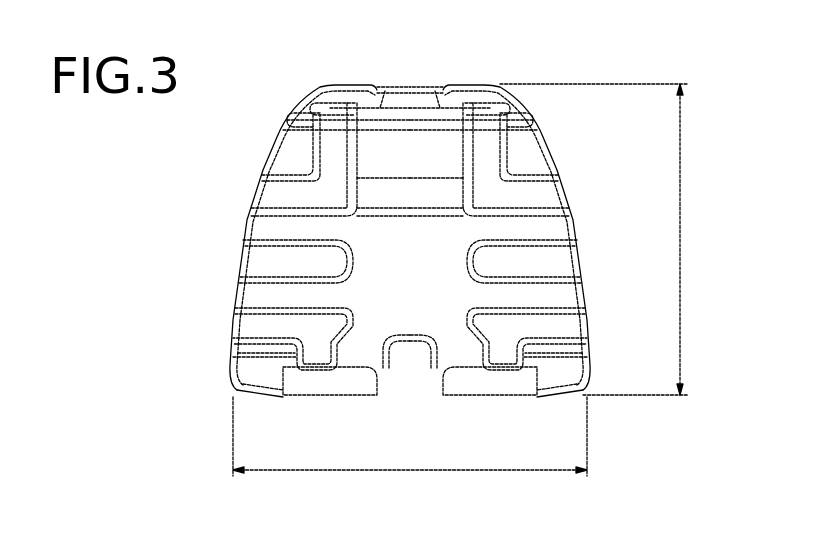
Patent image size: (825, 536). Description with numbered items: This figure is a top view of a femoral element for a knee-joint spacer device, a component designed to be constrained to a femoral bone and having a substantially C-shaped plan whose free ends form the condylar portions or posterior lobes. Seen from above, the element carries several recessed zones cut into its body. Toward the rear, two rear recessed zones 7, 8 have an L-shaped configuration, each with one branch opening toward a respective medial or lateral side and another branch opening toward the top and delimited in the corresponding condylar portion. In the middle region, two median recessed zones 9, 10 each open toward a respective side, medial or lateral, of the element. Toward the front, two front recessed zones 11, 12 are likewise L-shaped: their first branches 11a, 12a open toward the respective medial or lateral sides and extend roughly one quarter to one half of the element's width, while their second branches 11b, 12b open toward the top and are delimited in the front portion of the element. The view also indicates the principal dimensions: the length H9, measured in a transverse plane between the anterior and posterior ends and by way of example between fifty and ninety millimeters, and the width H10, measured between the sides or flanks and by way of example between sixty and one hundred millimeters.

The rear recessed zone 7 is at (265, 334).
The rear recessed zone 8 is at (550, 330).
The median recessed zone 9 is at (270, 268).
The median recessed zone 10 is at (537, 263).
The front recessed zone 11 is at (493, 193).
The first branch 11a is at (533, 198).
The second branch 11b is at (483, 125).
The front recessed zone 12 is at (327, 197).
The first branch 12a is at (287, 203).
The second branch 12b is at (337, 143).
The length H9 is at (680, 270).
The width H10 is at (360, 470).